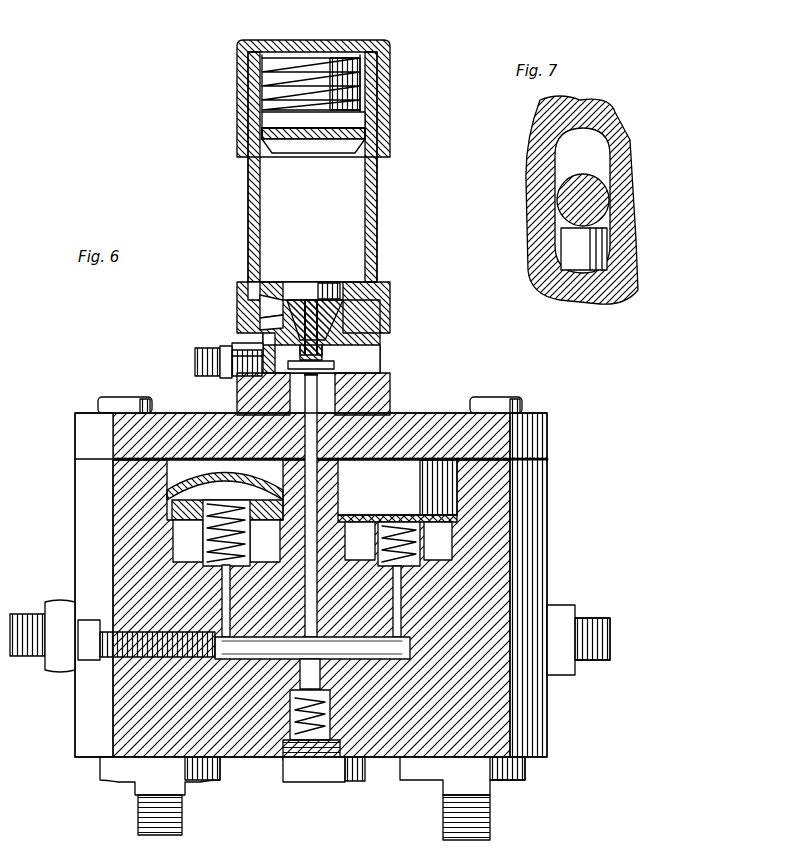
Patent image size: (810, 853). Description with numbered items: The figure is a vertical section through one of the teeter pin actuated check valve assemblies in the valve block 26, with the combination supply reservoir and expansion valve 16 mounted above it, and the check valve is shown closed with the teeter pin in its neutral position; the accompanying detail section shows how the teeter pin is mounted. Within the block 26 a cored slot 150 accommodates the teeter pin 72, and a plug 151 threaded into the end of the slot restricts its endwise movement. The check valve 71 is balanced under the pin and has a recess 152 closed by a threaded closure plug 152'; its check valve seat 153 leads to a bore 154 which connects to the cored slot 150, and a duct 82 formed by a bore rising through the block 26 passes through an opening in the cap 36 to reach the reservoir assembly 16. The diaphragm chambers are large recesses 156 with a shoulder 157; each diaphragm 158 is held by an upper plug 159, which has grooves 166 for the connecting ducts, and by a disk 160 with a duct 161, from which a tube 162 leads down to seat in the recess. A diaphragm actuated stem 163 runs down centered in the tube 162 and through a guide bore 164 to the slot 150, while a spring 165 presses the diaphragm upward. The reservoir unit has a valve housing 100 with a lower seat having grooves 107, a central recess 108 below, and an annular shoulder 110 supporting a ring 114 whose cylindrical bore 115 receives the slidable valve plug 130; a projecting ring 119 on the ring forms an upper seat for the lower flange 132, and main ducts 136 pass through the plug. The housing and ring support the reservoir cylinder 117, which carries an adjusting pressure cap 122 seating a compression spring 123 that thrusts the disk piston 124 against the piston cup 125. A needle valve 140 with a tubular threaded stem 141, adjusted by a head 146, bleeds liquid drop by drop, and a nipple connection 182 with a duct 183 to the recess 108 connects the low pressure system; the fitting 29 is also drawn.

In FIG. 6, the combination supply reservoir and expansion valve 16 is at (395, 203).
In FIG. 6, the valve block 26 is at (525, 486).
In FIG. 6, the inlet fitting 29 is at (160, 796).
In FIG. 6, the cap 36 is at (436, 418).
In FIG. 6, the check valve 71 is at (362, 755).
In FIG. 7, the teeter pin 72 is at (600, 208).
In FIG. 6, the duct connection 82 is at (370, 445).
In FIG. 6, the valve housing 100 is at (392, 298).
In FIG. 6, the grooves 107 is at (382, 344).
In FIG. 6, the central recess 108 is at (385, 378).
In FIG. 6, the annular shoulder 110 is at (383, 318).
In FIG. 6, the ring 114 is at (260, 286).
In FIG. 6, the cylindrical bore 115 is at (290, 298).
In FIG. 6, the reservoir cylinder 117 is at (248, 194).
In FIG. 6, the projecting ring 119 is at (265, 338).
In FIG. 6, the adjusting pressure cap 122 is at (237, 62).
In FIG. 6, the compression spring 123 is at (305, 57).
In FIG. 6, the disk piston 124 is at (262, 122).
In FIG. 6, the piston cup 125 is at (292, 153).
In FIG. 6, the slidable valve plug 130 is at (262, 296).
In FIG. 6, the lower flange 132 is at (232, 347).
In FIG. 6, the main ducts 136 is at (262, 322).
In FIG. 6, the needle valve 140 is at (352, 268).
In FIG. 6, the tubular threaded stem 141 is at (360, 300).
In FIG. 6, the head 146 is at (337, 362).
In FIG. 7, the cored slot 150 is at (598, 160).
In FIG. 6, the plug 151 is at (113, 670).
In FIG. 6, the recess 152 is at (332, 756).
In FIG. 6, the closure plug 152' is at (309, 774).
In FIG. 6, the check valve seat 153 is at (300, 735).
In FIG. 6, the bore 154 is at (330, 672).
In FIG. 6, the recesses 156 is at (440, 540).
In FIG. 6, the shoulder 157 is at (205, 530).
In FIG. 6, the diaphragm 158 is at (170, 490).
In FIG. 6, the upper plug 159 is at (168, 475).
In FIG. 6, the disk 160 is at (200, 510).
In FIG. 6, the duct 161 is at (189, 541).
In FIG. 6, the tube 162 is at (265, 541).
In FIG. 6, the diaphragm actuated stem 163 is at (400, 610).
In FIG. 6, the guide bore 164 is at (110, 632).
In FIG. 6, the spring 165 is at (222, 600).
In FIG. 6, the grooves 166 is at (223, 460).
In FIG. 6, the nipple connection 182 is at (202, 362).
In FIG. 6, the duct 183 is at (272, 390).